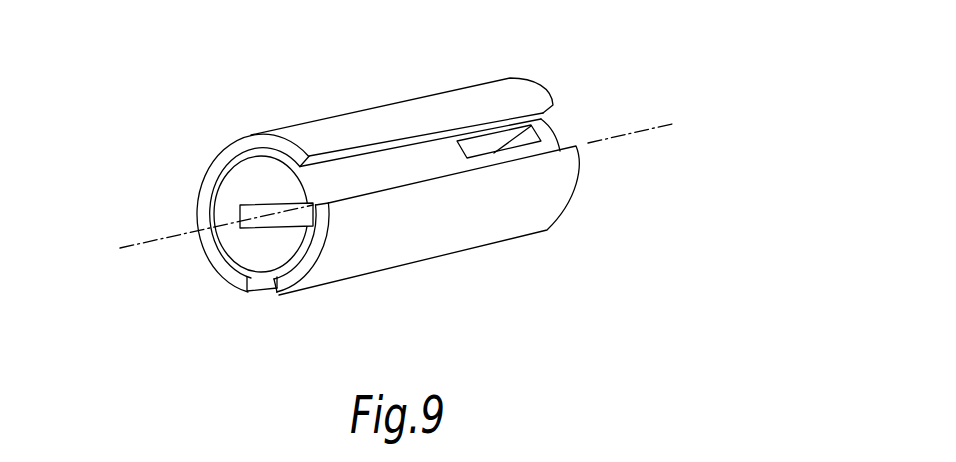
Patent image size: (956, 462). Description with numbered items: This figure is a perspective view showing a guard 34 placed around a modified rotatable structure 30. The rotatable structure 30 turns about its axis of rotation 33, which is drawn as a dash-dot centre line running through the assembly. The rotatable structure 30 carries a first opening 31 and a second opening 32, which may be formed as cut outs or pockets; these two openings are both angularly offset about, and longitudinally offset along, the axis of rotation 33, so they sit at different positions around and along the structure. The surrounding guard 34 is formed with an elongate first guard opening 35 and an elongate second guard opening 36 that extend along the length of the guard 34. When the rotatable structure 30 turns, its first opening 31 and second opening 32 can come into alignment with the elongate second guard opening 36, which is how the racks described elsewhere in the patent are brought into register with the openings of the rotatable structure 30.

The rotatable structure 30 is at (240, 238).
The first opening 31 is at (488, 142).
The second opening 32 is at (248, 204).
The axis of rotation 33 is at (140, 242).
The guard 34 is at (315, 137).
The first guard opening 35 is at (402, 157).
The second guard opening 36 is at (262, 295).